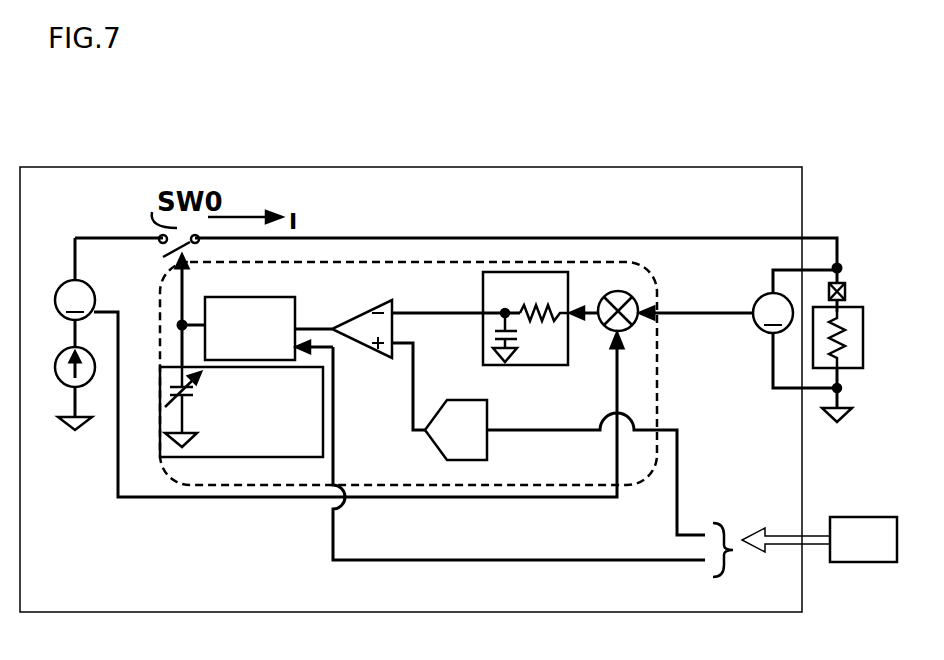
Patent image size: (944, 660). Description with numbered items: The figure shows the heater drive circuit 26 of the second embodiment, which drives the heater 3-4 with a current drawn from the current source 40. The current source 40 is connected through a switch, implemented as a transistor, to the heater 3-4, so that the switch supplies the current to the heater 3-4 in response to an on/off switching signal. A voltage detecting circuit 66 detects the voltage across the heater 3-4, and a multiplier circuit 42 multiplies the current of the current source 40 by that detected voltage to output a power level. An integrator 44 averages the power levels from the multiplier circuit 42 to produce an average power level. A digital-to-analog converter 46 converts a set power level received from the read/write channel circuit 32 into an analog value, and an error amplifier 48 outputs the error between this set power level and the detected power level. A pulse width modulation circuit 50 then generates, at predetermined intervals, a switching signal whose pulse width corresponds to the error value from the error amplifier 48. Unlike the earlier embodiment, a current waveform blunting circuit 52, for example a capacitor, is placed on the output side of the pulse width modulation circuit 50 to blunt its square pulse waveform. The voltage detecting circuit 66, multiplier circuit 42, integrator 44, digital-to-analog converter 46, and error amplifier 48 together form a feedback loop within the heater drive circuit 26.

The heater drive circuit 26 is at (566, 166).
The current source 40 is at (88, 385).
The pulse width modulation circuit 50 is at (235, 300).
The current waveform blunting circuit 52 is at (220, 450).
The error amplifier 48 is at (380, 343).
The integrator 44 is at (483, 295).
The multiplier circuit 42 is at (606, 330).
The digital-to-analog converter 46 is at (490, 408).
The voltage detecting circuit 66 is at (757, 333).
The heater 3-4 is at (858, 370).
The read/write channel circuit 32 is at (848, 563).